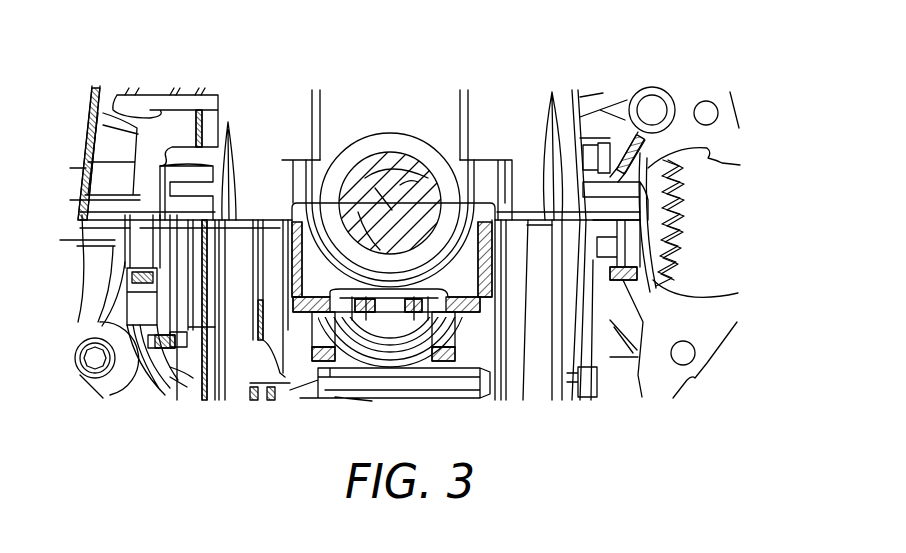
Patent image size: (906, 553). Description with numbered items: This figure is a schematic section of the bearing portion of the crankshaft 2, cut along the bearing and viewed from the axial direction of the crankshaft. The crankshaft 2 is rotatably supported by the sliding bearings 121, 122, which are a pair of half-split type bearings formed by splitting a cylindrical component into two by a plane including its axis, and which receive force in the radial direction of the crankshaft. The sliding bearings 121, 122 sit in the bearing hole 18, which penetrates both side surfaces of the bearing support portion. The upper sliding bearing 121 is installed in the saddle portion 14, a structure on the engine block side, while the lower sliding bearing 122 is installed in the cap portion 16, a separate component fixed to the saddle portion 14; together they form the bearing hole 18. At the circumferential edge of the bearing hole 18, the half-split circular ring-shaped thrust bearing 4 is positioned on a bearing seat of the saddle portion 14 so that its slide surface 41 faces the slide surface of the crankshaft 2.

The crankshaft 2 is at (356, 216).
The thrust bearing 4 is at (345, 142).
The saddle portion 14 is at (445, 112).
The cap portion 16 is at (463, 287).
The bearing hole 18 is at (438, 184).
The slide surface 41 is at (380, 143).
The sliding bearing 121 is at (389, 152).
The sliding bearing 122 is at (386, 240).